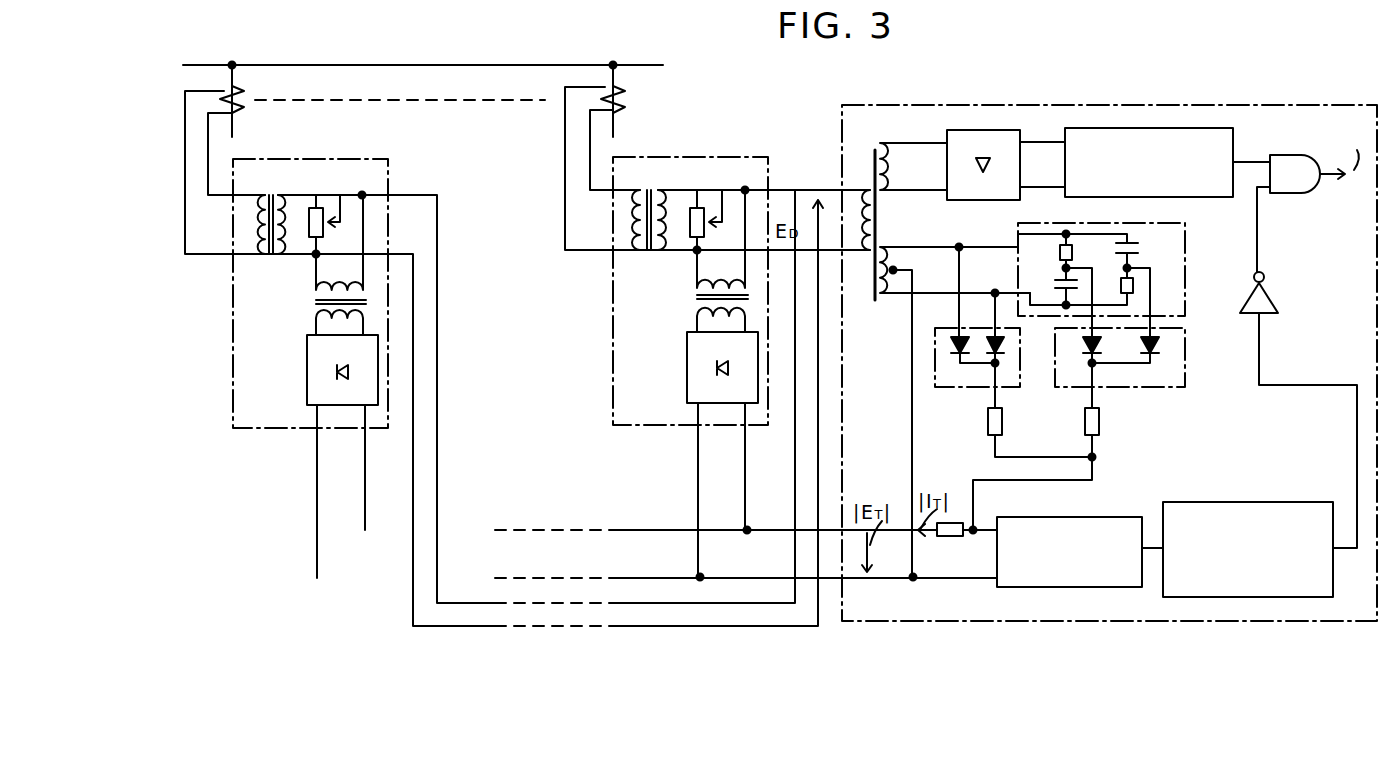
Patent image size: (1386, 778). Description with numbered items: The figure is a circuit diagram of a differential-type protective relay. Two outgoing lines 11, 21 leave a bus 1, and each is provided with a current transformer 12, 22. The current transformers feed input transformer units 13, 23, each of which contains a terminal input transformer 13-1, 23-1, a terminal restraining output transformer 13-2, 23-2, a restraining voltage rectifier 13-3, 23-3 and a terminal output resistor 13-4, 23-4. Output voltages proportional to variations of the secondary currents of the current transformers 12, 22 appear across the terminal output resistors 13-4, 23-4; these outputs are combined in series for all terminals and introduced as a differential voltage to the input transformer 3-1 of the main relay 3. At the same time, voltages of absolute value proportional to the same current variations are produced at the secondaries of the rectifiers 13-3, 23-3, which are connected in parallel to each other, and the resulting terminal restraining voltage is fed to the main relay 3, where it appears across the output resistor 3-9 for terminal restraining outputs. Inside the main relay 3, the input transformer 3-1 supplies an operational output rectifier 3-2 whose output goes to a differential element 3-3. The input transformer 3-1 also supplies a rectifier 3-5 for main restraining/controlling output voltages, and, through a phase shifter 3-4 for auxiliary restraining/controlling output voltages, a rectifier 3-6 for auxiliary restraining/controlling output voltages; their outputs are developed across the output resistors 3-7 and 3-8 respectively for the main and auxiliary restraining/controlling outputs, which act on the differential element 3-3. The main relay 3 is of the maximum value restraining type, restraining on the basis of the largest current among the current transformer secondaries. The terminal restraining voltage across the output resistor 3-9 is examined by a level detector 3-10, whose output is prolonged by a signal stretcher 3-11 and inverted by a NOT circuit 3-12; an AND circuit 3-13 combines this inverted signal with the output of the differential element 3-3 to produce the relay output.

The bus 1 is at (427, 55).
The outgoing line 11 is at (236, 79).
The current transformer 12 is at (240, 108).
The input transformer unit 13 is at (388, 162).
The terminal input transformer 13-1 is at (283, 258).
The terminal restraining output transformer 13-2 is at (316, 302).
The restraining voltage rectifier 13-3 is at (307, 394).
The terminal output resistor 13-4 is at (316, 207).
The outgoing line 21 is at (617, 77).
The current transformer 22 is at (620, 105).
The input transformer unit 23 is at (728, 157).
The terminal input transformer 23-1 is at (656, 253).
The terminal restraining output transformer 23-2 is at (697, 300).
The restraining voltage rectifier 23-3 is at (687, 394).
The terminal output resistor 23-4 is at (697, 207).
The main relay 3 is at (1040, 103).
The input transformer 3-1 is at (876, 150).
The operational output rectifier 3-2 is at (967, 200).
The differential element 3-3 is at (1233, 143).
The phase shifter 3-4 is at (1187, 253).
The rectifier for main restraining/controlling output voltages 3-5 is at (955, 387).
The rectifier for auxiliary restraining/controlling output voltages 3-6 is at (1186, 357).
The output resistor for main restraining/controlling output 3-7 is at (988, 422).
The output resistor for auxiliary restraining/controlling output 3-8 is at (1100, 421).
The output resistor for terminal restraining outputs 3-9 is at (950, 537).
The level detector 3-10 is at (1083, 517).
The signal stretcher 3-11 is at (1257, 481).
The NOT circuit 3-12 is at (1272, 300).
The AND circuit 3-13 is at (1298, 193).